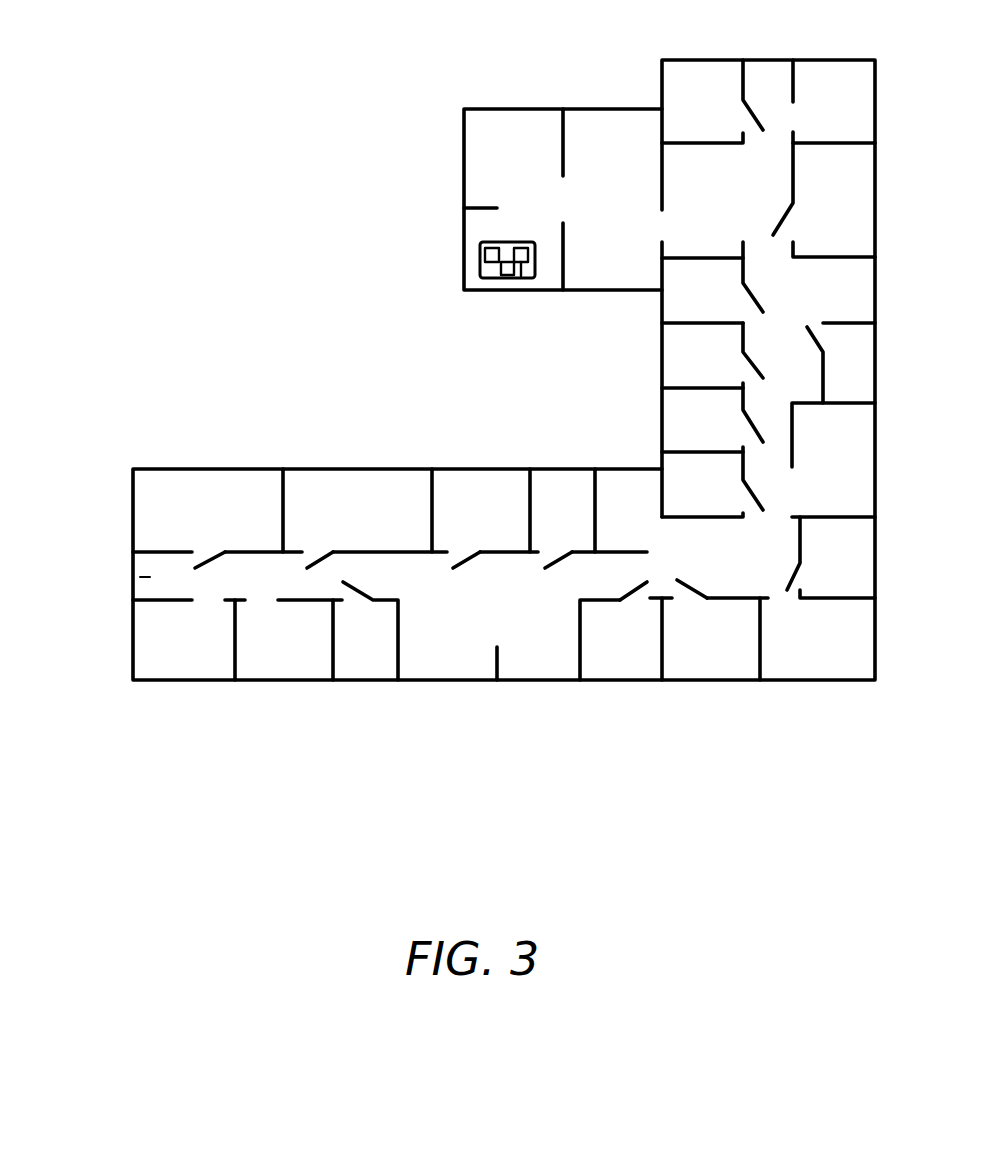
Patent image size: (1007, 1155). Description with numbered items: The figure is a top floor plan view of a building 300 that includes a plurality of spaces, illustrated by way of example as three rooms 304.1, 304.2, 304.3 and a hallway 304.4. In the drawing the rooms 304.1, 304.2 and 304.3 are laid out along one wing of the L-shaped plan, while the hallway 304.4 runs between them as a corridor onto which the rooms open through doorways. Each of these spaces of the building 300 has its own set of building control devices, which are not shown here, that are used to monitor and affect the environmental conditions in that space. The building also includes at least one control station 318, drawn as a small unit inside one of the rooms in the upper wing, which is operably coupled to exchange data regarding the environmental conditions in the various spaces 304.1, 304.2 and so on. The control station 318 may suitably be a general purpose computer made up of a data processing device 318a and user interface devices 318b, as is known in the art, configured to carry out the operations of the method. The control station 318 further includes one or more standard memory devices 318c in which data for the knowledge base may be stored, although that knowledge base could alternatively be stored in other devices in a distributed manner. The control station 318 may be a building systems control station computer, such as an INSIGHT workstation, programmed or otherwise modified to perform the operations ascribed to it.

The building 300 is at (210, 105).
The room 304.1 is at (189, 640).
The room 304.2 is at (297, 640).
The room 304.3 is at (233, 518).
The hallway 304.4 is at (148, 577).
The control station 318 is at (480, 263).
The data processing device 318a is at (480, 253).
The user interface devices 318b is at (525, 281).
The memory devices 318c is at (505, 278).